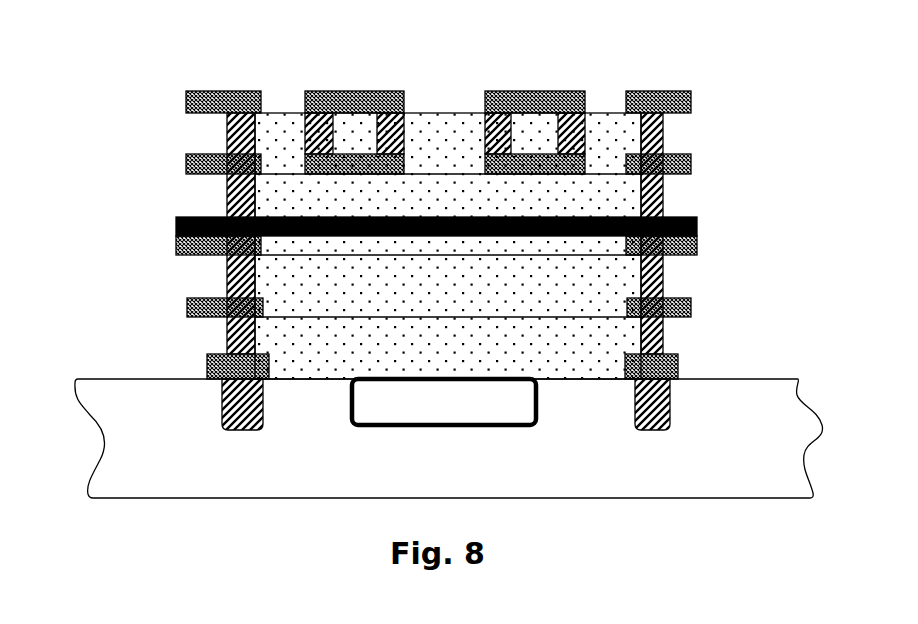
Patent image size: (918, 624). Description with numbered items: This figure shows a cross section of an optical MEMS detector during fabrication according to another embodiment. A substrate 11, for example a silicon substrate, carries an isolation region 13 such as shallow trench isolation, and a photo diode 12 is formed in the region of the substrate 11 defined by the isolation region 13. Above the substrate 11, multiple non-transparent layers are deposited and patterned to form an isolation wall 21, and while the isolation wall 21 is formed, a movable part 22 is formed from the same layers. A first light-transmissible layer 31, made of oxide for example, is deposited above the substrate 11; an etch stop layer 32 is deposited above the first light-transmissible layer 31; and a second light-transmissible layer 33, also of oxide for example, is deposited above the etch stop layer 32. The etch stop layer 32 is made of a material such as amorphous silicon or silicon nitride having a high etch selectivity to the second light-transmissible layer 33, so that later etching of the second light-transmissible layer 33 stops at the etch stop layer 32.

The substrate 11 is at (204, 459).
The photo diode 12 is at (460, 408).
The isolation region 13 is at (668, 403).
The isolation wall 21 is at (431, 193).
The movable part 22 is at (600, 68).
The first light-transmissible layer 31 is at (297, 288).
The etch stop layer 32 is at (176, 218).
The second light-transmissible layer 33 is at (270, 140).